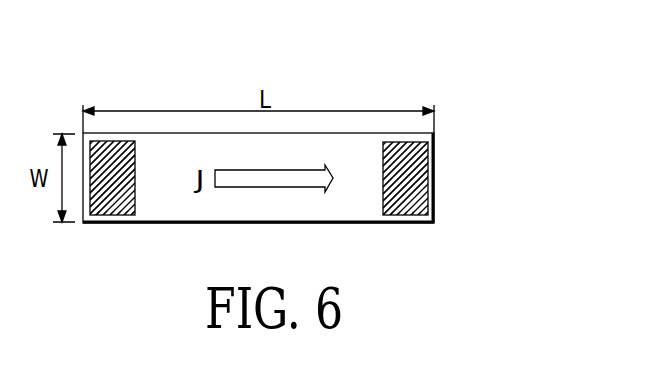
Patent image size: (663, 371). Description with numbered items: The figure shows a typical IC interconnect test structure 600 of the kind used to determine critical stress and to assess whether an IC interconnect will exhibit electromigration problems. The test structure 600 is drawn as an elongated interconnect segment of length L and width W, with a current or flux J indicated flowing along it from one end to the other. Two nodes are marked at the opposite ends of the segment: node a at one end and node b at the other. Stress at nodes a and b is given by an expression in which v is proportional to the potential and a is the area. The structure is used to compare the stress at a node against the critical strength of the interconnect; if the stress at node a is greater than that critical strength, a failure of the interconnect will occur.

The test structure 600 is at (499, 97).
The node a is at (113, 205).
The node b is at (407, 198).